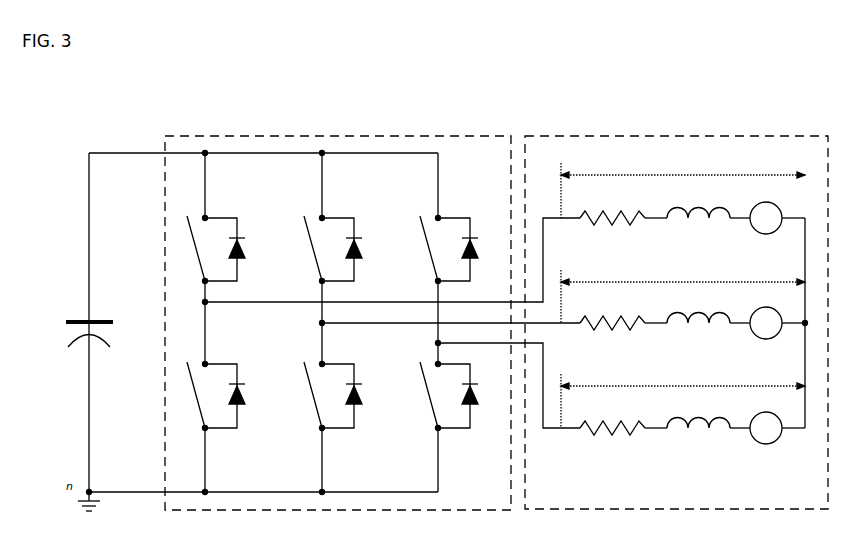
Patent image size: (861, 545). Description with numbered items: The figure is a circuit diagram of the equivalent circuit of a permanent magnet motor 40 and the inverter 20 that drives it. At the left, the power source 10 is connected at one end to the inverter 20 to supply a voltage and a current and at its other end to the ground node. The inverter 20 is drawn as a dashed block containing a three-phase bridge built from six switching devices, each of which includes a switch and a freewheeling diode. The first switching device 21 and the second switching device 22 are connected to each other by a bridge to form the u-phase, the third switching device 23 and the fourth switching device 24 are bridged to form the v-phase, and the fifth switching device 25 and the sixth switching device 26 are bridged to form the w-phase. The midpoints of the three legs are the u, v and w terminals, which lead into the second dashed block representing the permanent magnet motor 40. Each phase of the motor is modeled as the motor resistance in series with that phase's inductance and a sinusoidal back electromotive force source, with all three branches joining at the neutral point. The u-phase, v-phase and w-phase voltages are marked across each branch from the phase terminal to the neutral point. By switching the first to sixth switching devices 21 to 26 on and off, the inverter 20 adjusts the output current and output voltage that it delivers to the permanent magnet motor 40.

The power source 10 is at (80, 318).
The inverter 20 is at (402, 136).
The first switching device 21 is at (226, 216).
The second switching device 22 is at (224, 362).
The third switching device 23 is at (342, 216).
The fourth switching device 24 is at (337, 430).
The fifth switching device 25 is at (457, 216).
The sixth switching device 26 is at (452, 430).
The permanent magnet motor 40 is at (710, 136).